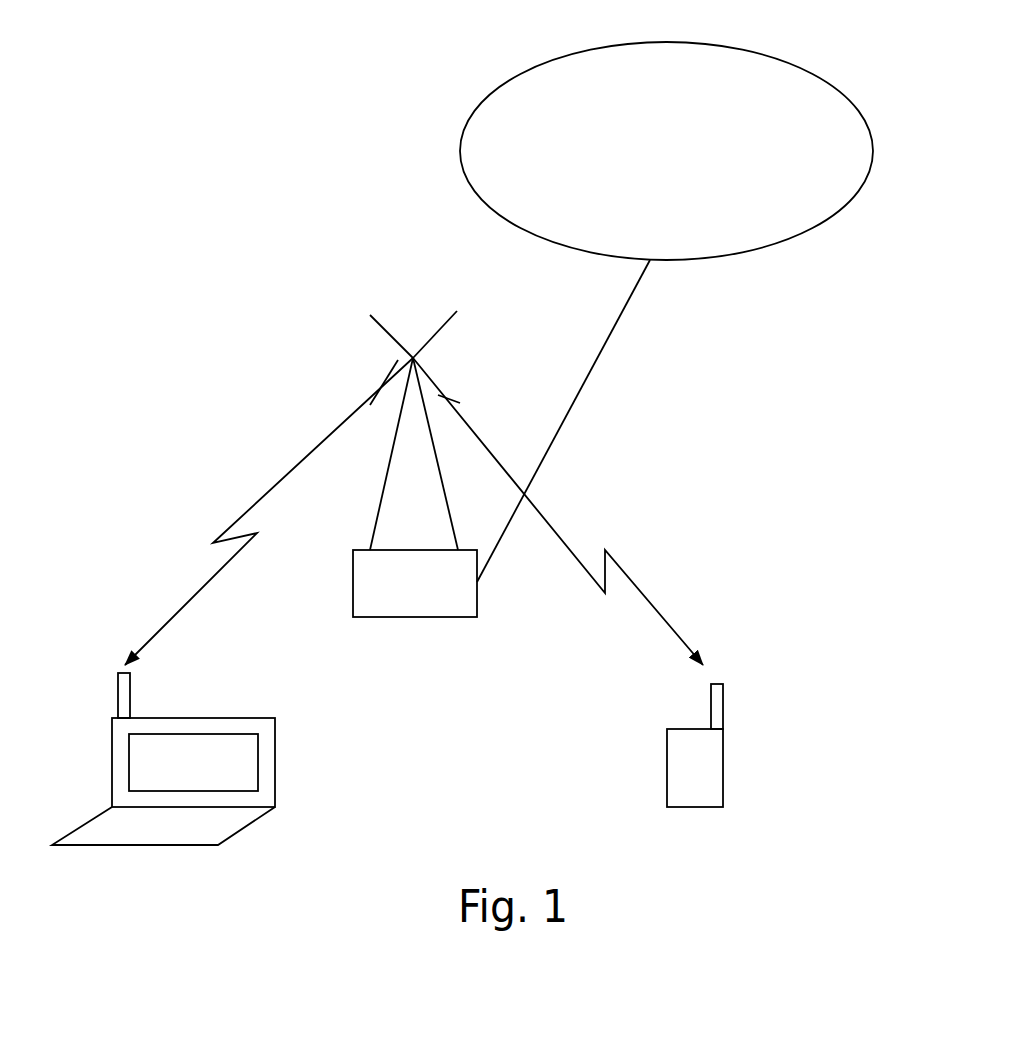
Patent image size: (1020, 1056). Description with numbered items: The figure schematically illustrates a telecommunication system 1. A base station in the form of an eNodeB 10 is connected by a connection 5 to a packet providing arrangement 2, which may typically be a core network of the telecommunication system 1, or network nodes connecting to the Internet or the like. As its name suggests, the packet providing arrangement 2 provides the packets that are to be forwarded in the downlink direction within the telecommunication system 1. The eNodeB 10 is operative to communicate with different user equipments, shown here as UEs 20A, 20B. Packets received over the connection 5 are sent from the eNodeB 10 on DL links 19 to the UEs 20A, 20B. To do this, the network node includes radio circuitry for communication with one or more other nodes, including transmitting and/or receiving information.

The telecommunication system 1 is at (268, 241).
The packet providing arrangement 2 is at (735, 257).
The connection 5 is at (583, 388).
The eNodeB 10 is at (375, 583).
The DL links 19 is at (268, 487).
The UE 20A is at (712, 790).
The UE 20B is at (247, 828).